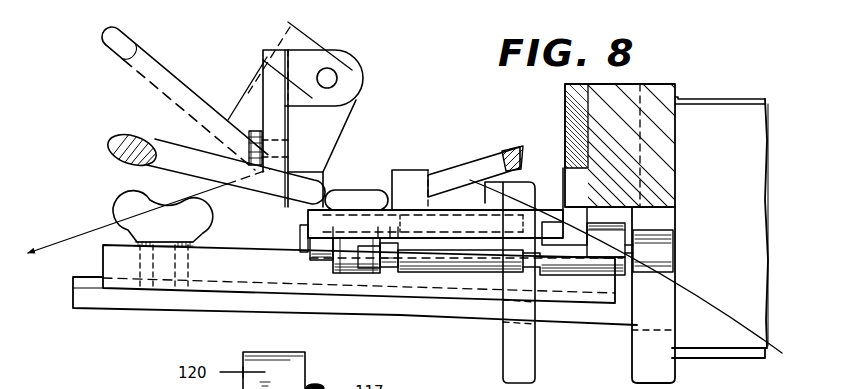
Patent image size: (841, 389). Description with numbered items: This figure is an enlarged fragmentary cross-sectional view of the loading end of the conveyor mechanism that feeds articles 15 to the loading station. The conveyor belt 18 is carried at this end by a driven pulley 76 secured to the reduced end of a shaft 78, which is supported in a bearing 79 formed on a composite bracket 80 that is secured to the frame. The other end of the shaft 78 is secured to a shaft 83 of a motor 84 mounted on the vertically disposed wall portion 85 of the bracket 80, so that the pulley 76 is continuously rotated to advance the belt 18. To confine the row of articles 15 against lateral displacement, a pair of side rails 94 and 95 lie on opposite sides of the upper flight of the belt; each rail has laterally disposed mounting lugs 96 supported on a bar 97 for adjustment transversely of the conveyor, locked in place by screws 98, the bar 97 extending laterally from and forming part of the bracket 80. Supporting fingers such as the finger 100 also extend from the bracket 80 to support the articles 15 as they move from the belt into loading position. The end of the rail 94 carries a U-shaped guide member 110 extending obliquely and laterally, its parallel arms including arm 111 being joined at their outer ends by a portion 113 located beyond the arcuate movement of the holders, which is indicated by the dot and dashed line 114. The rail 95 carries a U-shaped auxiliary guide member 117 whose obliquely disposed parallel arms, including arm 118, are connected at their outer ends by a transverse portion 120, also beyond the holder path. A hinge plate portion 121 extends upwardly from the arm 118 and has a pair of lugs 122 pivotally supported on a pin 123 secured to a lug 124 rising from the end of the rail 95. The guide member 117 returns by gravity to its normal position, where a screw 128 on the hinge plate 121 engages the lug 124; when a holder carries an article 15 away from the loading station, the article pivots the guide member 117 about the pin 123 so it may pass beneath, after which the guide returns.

The article 15 is at (355, 195).
The conveyor belt 18 is at (350, 264).
The driven pulley 76 is at (363, 258).
The shaft 78 is at (320, 246).
The bearing 79 is at (483, 257).
The composite bracket 80 is at (634, 82).
The motor shaft 83 is at (620, 262).
The motor 84 is at (735, 122).
The vertically disposed wall portion 85 is at (677, 97).
The side rail 94 is at (421, 173).
The side rail 95 is at (318, 174).
The mounting lug 96 is at (207, 272).
The bar 97 is at (101, 302).
The screw 98 is at (197, 220).
The supporting finger 100 is at (438, 228).
The U-shaped guide member 110 is at (525, 138).
The arm 111 is at (478, 160).
The connecting portion 113 is at (517, 150).
The dot and dashed line 114 is at (82, 231).
The U-shaped auxiliary guide member 117 is at (131, 80).
The arm 118 is at (183, 146).
The transverse portion 120 is at (108, 147).
The hinge plate portion 121 is at (267, 64).
The lug 122 is at (318, 58).
The pin 123 is at (333, 72).
The lug 124 is at (340, 115).
The screw 128 is at (247, 137).